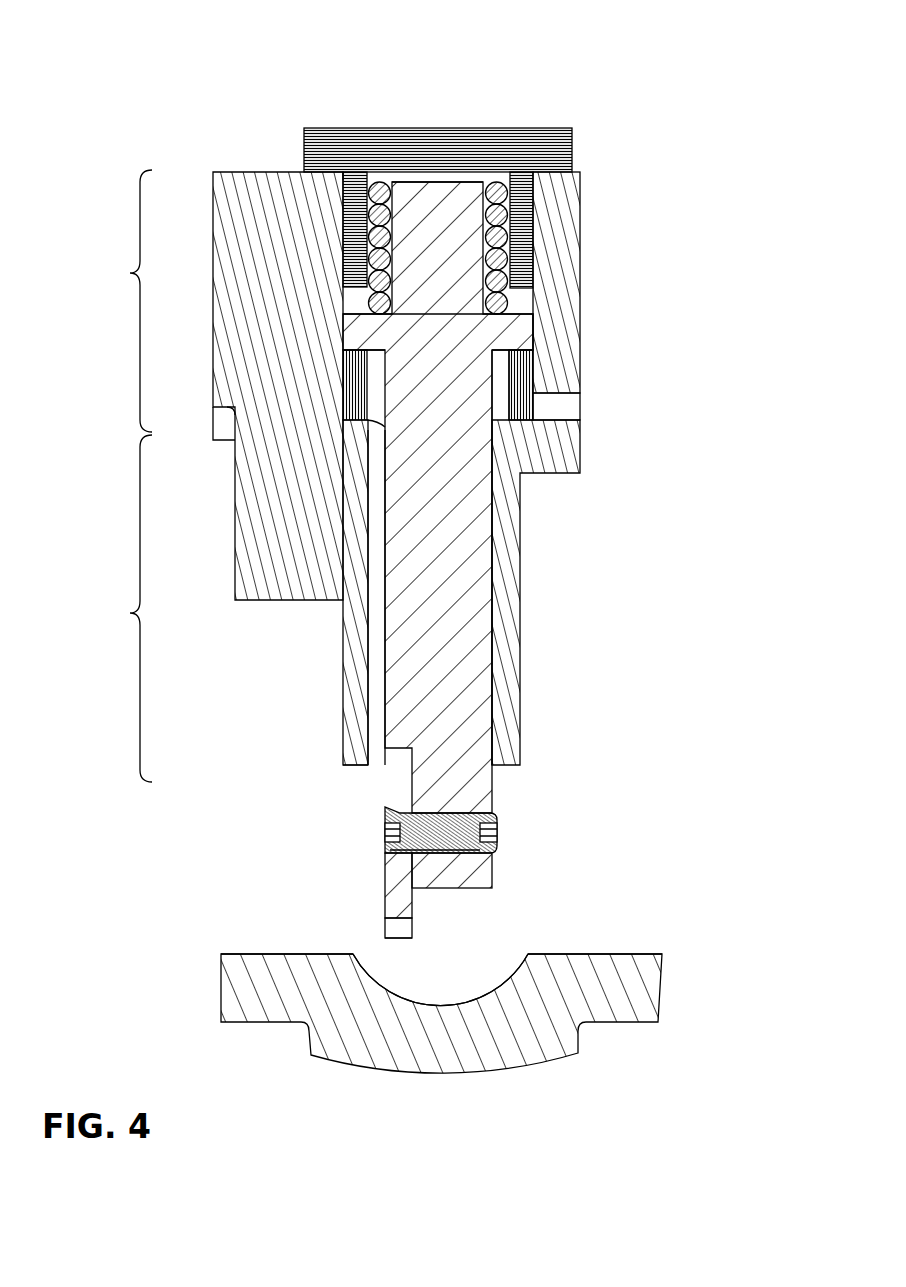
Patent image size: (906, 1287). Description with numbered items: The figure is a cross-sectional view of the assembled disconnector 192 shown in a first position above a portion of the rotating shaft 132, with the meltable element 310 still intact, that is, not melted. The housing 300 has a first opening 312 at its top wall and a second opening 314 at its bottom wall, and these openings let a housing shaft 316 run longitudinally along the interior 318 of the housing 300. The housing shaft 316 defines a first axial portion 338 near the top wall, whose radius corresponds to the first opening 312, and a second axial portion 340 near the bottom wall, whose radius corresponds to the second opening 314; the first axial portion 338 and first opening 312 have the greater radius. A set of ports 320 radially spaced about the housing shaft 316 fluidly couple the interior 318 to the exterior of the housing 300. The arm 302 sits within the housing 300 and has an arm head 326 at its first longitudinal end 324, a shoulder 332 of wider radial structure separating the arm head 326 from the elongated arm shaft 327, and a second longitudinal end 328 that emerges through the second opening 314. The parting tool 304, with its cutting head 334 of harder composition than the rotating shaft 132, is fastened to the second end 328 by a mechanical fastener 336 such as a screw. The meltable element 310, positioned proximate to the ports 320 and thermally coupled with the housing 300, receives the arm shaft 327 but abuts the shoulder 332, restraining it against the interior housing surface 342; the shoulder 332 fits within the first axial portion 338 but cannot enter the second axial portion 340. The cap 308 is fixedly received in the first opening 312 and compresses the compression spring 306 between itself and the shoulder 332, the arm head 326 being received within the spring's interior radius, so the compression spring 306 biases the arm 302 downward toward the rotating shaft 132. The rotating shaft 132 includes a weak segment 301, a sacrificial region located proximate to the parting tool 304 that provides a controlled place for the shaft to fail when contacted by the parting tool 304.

The disconnector 192 is at (667, 105).
The cap 308 is at (520, 148).
The compression spring 306 is at (522, 224).
The first opening 312 is at (342, 176).
The first longitudinal end 324 is at (381, 214).
The housing 300 is at (582, 247).
The set of ports 320 is at (560, 407).
The arm shaft 327 is at (445, 543).
The arm head 326 is at (445, 265).
The shoulder 332 is at (518, 330).
The meltable element 310 is at (497, 382).
The interior housing surface 342 is at (498, 400).
The housing shaft 316 is at (372, 645).
The interior 318 is at (380, 552).
The second opening 314 is at (360, 772).
The arm 302 is at (502, 692).
The mechanical fastener 336 is at (498, 840).
The parting tool 304 is at (402, 883).
The second longitudinal end 328 is at (508, 888).
The cutting head 334 is at (388, 943).
The first axial portion 338 is at (121, 301).
The second axial portion 340 is at (121, 608).
The rotating shaft 132 is at (632, 1002).
The weak segment 301 is at (496, 964).